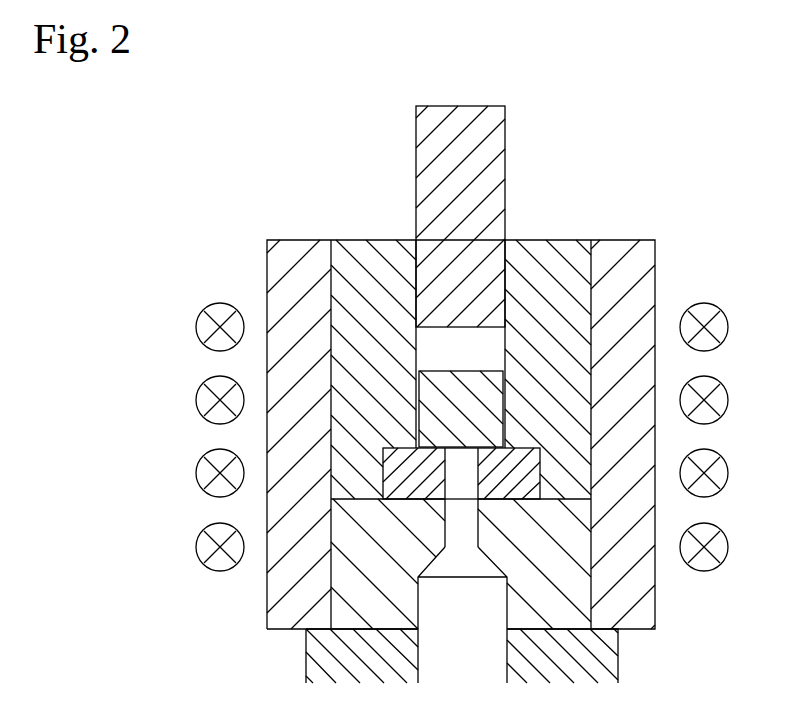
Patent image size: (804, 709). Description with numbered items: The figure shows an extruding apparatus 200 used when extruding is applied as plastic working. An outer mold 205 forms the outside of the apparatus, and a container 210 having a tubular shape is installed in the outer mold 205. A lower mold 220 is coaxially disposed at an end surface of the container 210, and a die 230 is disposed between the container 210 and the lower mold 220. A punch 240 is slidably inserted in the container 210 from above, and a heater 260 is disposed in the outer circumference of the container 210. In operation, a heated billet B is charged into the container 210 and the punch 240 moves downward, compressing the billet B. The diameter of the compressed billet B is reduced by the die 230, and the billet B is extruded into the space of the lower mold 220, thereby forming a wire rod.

The extruding apparatus 200 is at (673, 147).
The outer mold 205 is at (637, 293).
The container 210 is at (553, 250).
The lower mold 220 is at (580, 545).
The die 230 is at (527, 474).
The punch 240 is at (497, 136).
The heater 260 is at (222, 303).
The billet B is at (487, 386).